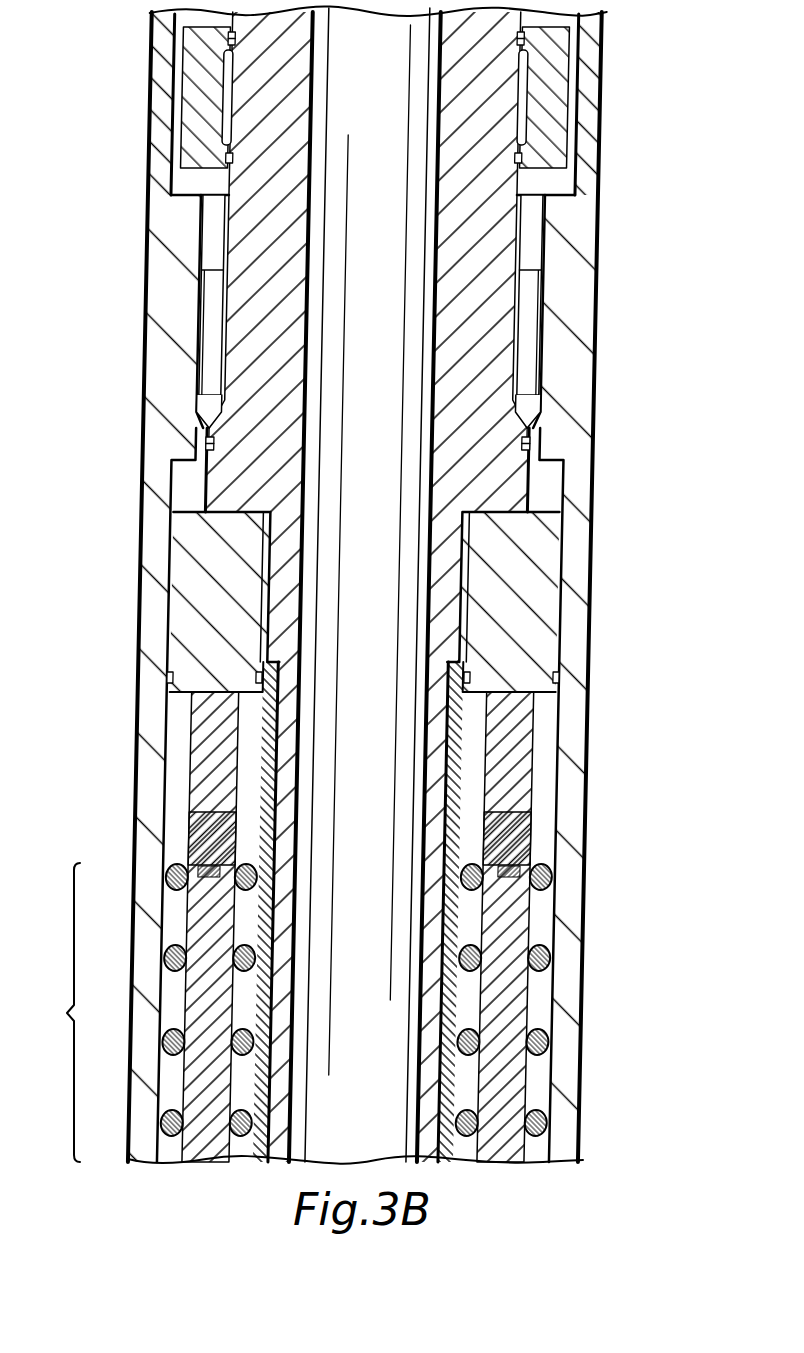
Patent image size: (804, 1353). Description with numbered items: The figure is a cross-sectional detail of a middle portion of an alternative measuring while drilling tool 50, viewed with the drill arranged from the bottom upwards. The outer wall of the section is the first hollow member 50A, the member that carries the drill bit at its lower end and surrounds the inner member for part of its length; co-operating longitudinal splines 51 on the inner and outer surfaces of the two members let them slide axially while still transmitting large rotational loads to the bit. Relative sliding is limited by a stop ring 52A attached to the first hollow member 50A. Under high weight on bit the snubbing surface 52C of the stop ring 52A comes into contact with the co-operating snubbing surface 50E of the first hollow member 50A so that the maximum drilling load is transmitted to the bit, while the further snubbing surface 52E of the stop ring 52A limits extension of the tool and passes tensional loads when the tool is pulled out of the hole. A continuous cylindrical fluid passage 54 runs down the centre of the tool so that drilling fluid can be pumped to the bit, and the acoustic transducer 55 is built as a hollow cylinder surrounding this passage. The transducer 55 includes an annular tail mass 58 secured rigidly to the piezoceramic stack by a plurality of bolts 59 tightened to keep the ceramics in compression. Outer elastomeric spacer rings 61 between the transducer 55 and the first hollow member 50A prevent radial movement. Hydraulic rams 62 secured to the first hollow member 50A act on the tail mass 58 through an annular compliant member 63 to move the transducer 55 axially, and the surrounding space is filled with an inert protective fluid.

The measuring while drilling (MWD) tool 50 is at (655, 562).
The first hollow member 50A is at (568, 775).
The snubbing surface 50E is at (560, 197).
The longitudinal splines 51 is at (525, 345).
The stop ring 52A is at (547, 103).
The snubbing surface 52C is at (572, 153).
The snubbing surface 52E is at (583, 49).
The cylindrical fluid passage 54 is at (417, 497).
The acoustic transducer 55 is at (55, 1012).
The annular tail mass 58 is at (503, 1098).
The bolts 59 is at (530, 888).
The outer elastomeric spacer rings 61 is at (550, 1040).
The hydraulic rams 62 is at (510, 692).
The annular compliant member 63 is at (520, 842).